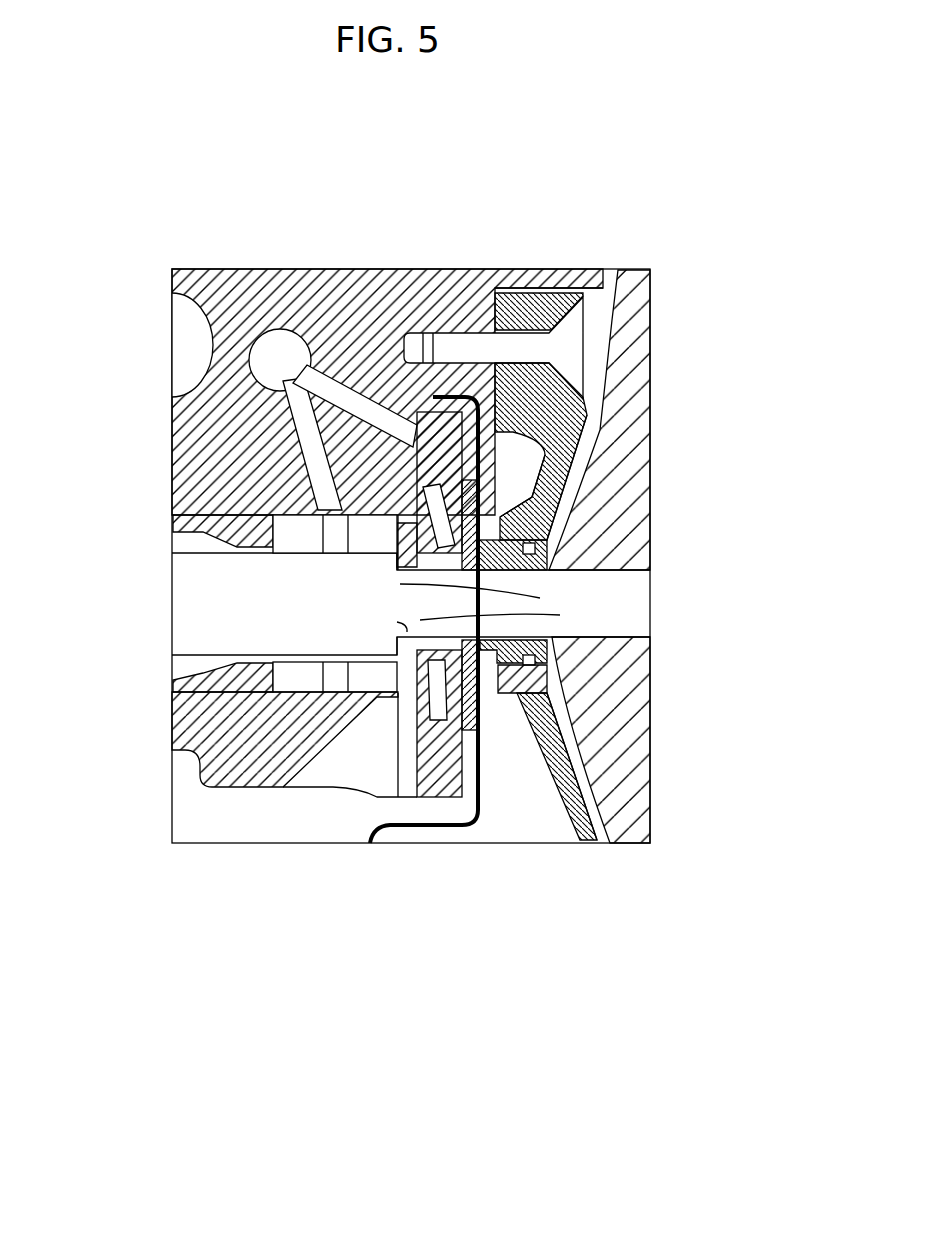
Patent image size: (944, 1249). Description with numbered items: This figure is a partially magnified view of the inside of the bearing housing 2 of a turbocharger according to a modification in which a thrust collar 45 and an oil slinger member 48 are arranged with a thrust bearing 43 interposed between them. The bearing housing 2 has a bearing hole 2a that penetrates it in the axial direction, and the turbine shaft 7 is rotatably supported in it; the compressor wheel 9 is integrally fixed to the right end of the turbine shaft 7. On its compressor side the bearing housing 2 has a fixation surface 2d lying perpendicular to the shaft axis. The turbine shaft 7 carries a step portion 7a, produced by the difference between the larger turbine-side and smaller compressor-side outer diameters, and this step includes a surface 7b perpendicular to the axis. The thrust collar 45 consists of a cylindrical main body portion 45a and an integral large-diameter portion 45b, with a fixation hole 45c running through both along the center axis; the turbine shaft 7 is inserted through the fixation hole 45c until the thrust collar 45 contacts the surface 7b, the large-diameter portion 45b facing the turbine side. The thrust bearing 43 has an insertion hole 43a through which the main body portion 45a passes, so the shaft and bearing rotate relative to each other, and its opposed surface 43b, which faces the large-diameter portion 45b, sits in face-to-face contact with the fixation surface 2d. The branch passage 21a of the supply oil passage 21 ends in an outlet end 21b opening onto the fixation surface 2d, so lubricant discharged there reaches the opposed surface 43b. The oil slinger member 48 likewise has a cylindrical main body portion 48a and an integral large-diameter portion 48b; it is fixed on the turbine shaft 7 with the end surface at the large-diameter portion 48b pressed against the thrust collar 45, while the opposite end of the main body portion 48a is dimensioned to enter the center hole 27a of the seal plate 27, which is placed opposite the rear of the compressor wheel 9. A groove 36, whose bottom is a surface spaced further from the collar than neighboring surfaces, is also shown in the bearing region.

The bearing housing 2 is at (283, 788).
The bearing hole 2a is at (205, 676).
The fixation surface 2d is at (474, 372).
The turbine shaft 7 is at (197, 662).
The step portion 7a is at (540, 598).
The surface 7b is at (560, 615).
The compressor wheel 9 is at (638, 320).
The supply oil passage 21 is at (258, 340).
The branch passage 21a is at (322, 372).
The outlet end 21b is at (480, 460).
The seal plate 27 is at (557, 813).
The center hole 27a is at (555, 660).
The groove 36 is at (427, 780).
The thrust bearing 43 is at (437, 405).
The insertion hole 43a is at (397, 588).
The opposed surface 43b is at (418, 412).
The thrust collar 45 is at (497, 673).
The main body portion 45a is at (437, 790).
The large-diameter portion 45b is at (401, 785).
The fixation hole 45c is at (397, 622).
The oil slinger member 48 is at (547, 550).
The main body portion 48a is at (540, 497).
The large-diameter portion 48b is at (483, 443).